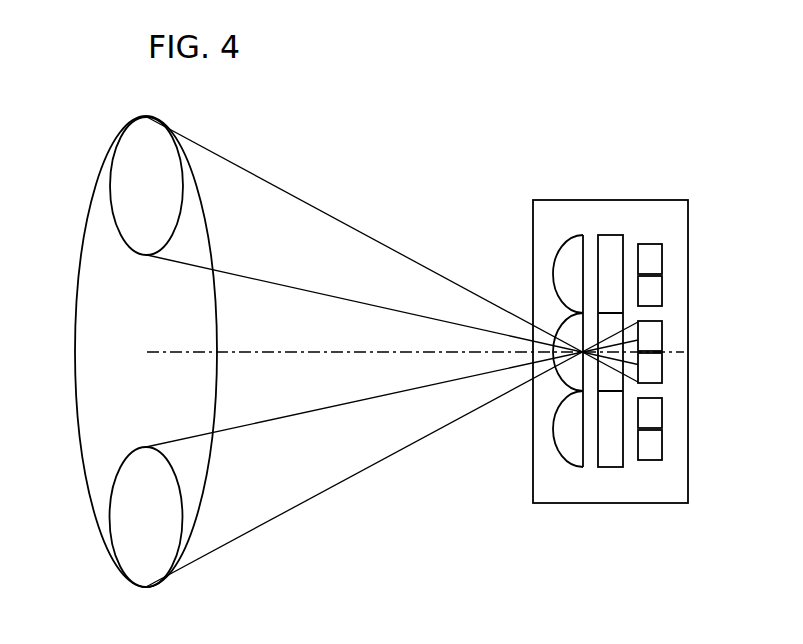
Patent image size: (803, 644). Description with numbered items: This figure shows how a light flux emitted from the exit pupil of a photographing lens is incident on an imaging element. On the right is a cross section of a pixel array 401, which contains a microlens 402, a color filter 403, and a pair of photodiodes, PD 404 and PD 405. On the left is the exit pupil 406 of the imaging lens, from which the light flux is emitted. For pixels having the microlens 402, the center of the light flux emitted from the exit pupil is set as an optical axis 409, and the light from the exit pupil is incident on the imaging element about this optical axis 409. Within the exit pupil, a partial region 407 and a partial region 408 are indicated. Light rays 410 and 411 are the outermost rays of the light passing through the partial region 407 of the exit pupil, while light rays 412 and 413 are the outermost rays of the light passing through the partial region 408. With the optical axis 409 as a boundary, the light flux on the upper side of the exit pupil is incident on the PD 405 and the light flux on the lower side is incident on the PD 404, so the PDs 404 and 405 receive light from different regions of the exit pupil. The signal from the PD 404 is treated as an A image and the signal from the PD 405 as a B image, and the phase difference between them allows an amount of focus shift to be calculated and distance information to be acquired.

The cross section of a pixel array 401 is at (672, 200).
The microlens 402 is at (566, 237).
The color filter 403 is at (611, 235).
The PD 404 is at (662, 330).
The PD 405 is at (662, 364).
The exit pupil of an imaging lens 406 is at (90, 212).
The partial region of the exit pupil 407 is at (114, 163).
The partial region of the exit pupil 408 is at (142, 447).
The optical axis 409 is at (308, 351).
The light ray 410 is at (350, 225).
The light ray 411 is at (352, 301).
The light ray 412 is at (402, 449).
The light ray 413 is at (343, 403).